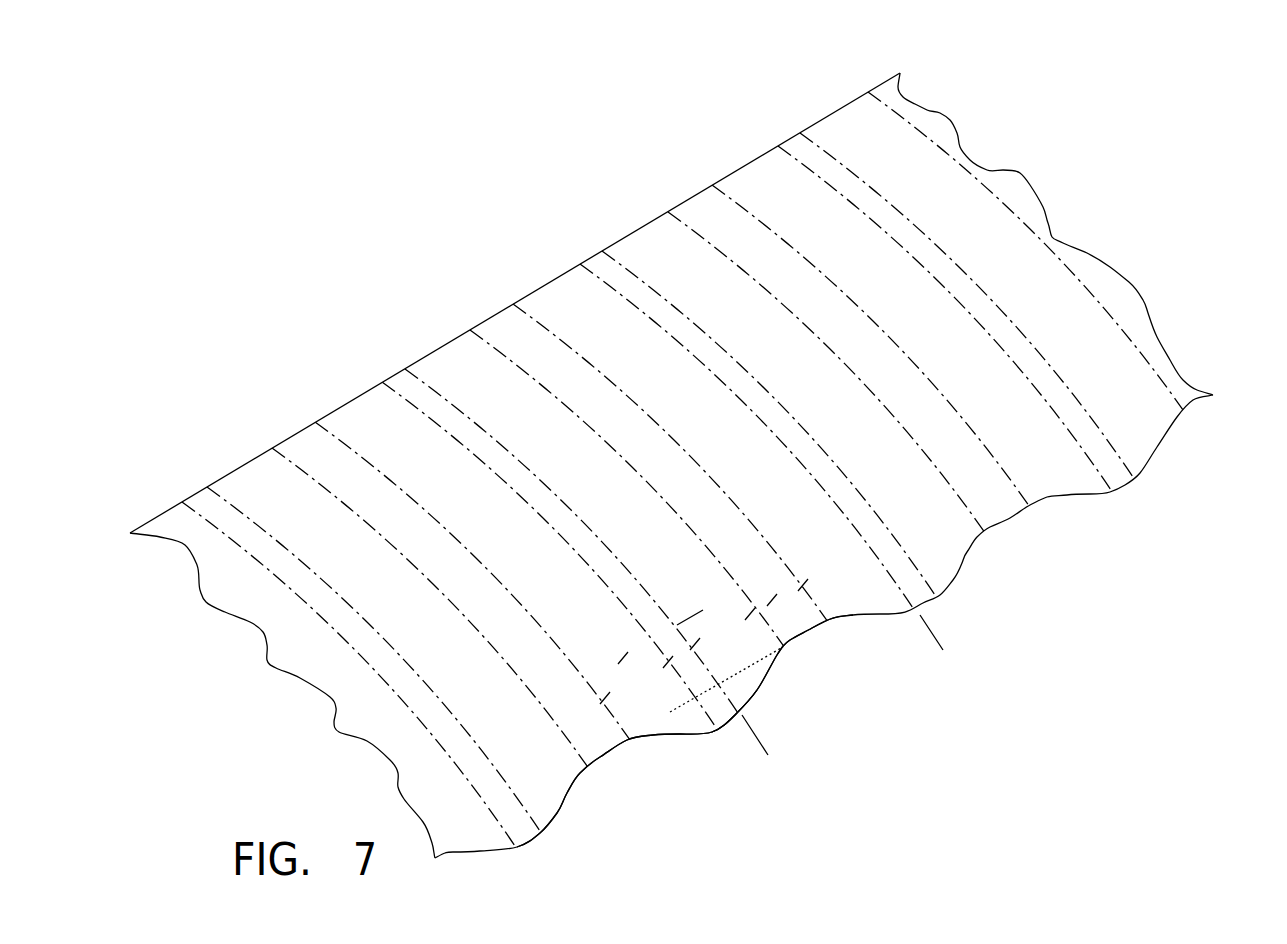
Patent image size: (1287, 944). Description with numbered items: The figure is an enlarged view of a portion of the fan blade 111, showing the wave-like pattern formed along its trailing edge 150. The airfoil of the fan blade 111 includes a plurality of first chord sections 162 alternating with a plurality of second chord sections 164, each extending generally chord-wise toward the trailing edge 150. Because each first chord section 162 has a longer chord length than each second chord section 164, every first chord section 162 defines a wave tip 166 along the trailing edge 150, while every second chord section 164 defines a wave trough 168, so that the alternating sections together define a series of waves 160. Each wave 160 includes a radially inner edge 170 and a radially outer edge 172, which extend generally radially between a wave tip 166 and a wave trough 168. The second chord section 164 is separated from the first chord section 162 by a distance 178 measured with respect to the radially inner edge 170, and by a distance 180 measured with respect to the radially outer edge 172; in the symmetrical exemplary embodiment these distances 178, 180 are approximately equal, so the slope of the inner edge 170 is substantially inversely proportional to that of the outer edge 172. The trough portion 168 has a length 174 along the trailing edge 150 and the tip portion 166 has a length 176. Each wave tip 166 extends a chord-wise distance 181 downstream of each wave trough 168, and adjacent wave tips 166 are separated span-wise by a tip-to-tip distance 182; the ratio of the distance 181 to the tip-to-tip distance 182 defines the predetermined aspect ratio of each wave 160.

The fan blade 111 is at (1155, 756).
The trailing edge 150 is at (1078, 640).
The wave 160 is at (968, 565).
The first chord section 162 is at (783, 408).
The second chord section 164 is at (685, 523).
The wave tip 166 is at (733, 724).
The wave trough 168 is at (617, 760).
The radially inner edge 170 is at (683, 742).
The radially outer edge 172 is at (772, 680).
The trough portion length 174 is at (803, 585).
The tip portion length 176 is at (650, 643).
The inner edge separation distance 178 is at (668, 662).
The outer edge separation distance 180 is at (750, 613).
The tip-to-trough chord-wise distance 181 is at (718, 688).
The tip-to-tip distance 182 is at (763, 750).